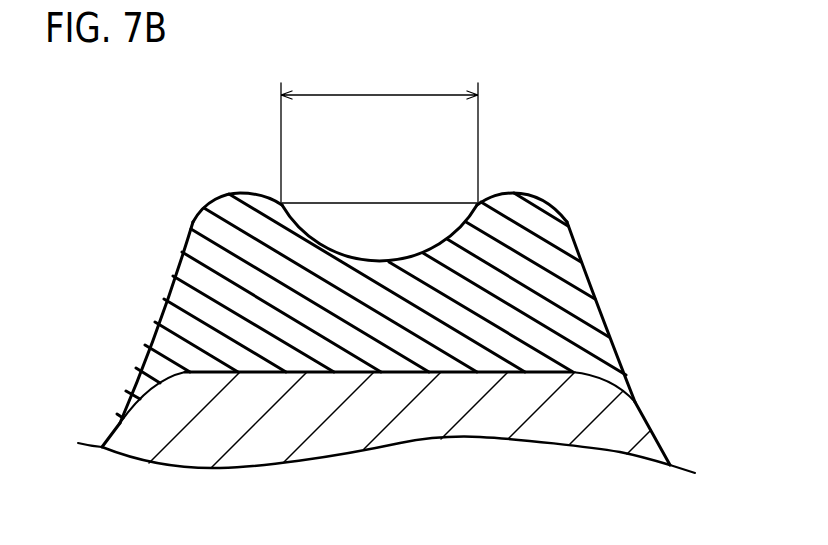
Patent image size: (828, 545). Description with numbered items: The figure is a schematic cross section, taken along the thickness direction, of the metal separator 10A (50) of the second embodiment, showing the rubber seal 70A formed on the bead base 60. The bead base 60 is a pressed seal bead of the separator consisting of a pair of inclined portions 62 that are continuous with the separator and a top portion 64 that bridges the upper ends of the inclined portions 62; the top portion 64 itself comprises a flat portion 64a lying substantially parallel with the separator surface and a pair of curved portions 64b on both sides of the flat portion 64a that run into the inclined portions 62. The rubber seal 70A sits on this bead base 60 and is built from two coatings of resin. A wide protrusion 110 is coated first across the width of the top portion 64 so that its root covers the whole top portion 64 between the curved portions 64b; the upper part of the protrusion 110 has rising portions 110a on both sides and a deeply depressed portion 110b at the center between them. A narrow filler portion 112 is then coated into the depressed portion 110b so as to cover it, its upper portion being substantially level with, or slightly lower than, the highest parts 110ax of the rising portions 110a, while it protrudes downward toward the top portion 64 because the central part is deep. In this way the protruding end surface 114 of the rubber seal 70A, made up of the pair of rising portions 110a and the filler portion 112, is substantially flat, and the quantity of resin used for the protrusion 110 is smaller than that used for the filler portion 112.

The metal separator 10A is at (85, 92).
The rotor core assembly 50 is at (136, 92).
The rubber seal 70A is at (178, 182).
The protrusion 110 is at (180, 295).
The rising portions 110a is at (192, 221).
The highest parts 110ax is at (247, 193).
The depressed portion 110b is at (401, 257).
The filler portion 112 is at (340, 225).
The protruding end surface 114 is at (330, 203).
The bead base 60 is at (116, 421).
The inclined portions 62 is at (628, 427).
The top portion 64 is at (433, 420).
The flat portion 64a is at (396, 374).
The curved portions 64b is at (166, 370).